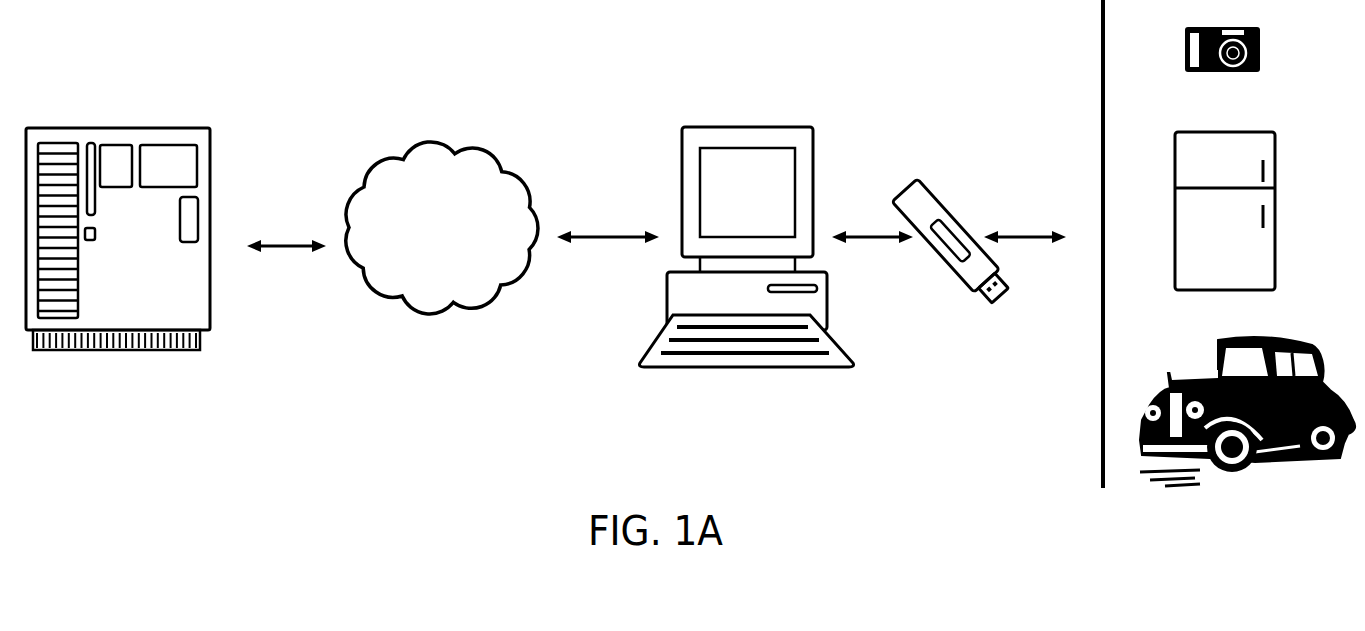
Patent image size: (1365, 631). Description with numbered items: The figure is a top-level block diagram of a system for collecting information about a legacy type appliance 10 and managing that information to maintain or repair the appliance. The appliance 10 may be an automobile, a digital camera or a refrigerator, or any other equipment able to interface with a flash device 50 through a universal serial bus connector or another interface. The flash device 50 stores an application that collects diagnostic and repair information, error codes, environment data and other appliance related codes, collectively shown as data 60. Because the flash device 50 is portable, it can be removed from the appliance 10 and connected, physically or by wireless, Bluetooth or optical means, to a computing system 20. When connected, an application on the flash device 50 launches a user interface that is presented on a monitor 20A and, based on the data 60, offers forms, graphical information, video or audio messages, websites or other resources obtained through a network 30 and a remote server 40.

The appliance 10 is at (1287, 453).
The computing system 20 is at (813, 290).
The monitor 20A is at (735, 160).
The network 30 is at (458, 143).
The remote server 40 is at (167, 128).
The flash device 50 is at (910, 180).
The data 60 is at (1018, 237).